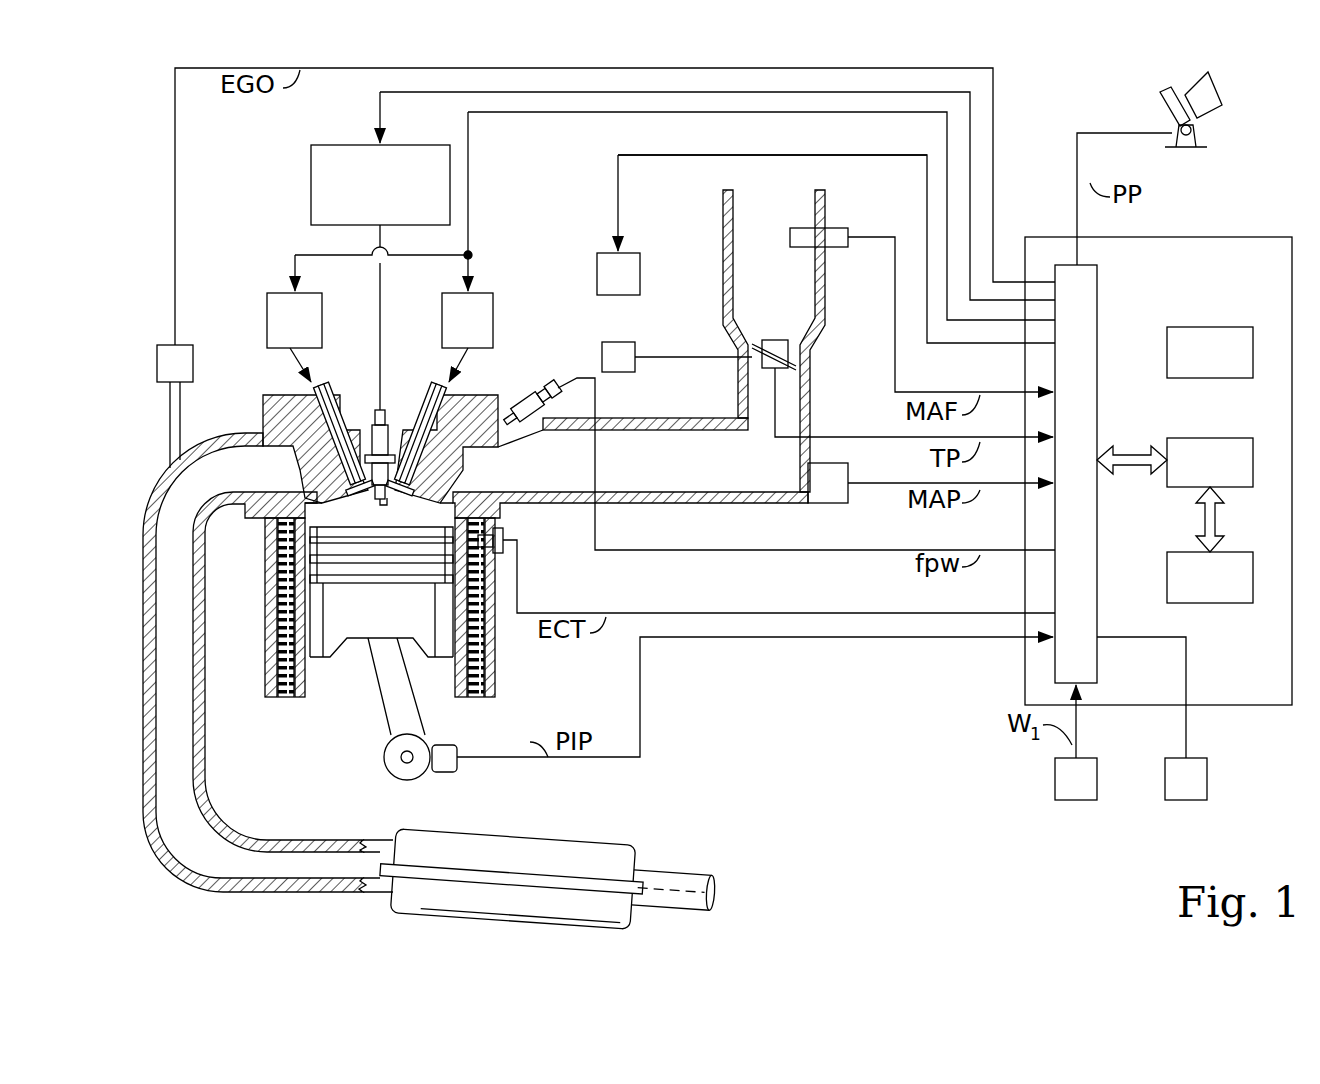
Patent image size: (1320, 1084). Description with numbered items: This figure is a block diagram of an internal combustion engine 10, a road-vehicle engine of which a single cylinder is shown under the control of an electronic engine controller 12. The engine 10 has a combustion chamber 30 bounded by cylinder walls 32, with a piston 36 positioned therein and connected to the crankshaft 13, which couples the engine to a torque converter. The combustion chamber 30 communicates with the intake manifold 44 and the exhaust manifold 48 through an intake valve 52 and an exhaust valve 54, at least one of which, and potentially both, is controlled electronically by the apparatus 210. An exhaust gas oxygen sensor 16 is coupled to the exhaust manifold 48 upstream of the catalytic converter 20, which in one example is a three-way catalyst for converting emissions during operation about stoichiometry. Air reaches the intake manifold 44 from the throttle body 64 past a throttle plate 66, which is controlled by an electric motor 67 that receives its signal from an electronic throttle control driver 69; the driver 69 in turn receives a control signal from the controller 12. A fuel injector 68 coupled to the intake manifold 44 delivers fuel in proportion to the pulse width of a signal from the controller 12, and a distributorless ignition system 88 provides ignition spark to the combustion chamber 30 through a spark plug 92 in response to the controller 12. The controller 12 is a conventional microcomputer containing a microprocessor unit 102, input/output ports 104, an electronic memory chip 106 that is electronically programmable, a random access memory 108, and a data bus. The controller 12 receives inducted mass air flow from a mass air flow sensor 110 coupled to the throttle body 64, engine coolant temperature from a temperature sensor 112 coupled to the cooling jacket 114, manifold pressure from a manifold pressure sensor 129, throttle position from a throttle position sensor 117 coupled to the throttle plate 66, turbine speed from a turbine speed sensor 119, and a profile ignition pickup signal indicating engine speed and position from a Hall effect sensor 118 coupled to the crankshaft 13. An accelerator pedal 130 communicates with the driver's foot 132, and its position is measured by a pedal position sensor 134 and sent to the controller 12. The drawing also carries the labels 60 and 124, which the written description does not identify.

The internal combustion engine 10 is at (297, 789).
The electronic engine controller 12 is at (1245, 237).
The crankshaft 13 is at (407, 775).
The exhaust gas oxygen sensor 16 is at (183, 345).
The catalytic converter 20 is at (597, 846).
The combustion chamber 30 is at (368, 515).
The cylinder walls 32 is at (312, 683).
The piston 36 is at (375, 645).
The intake manifold 44 is at (715, 482).
The exhaust manifold 48 is at (150, 505).
The intake valve 52 is at (430, 488).
The exhaust valve 54 is at (320, 488).
The control signal line 60 is at (762, 155).
The throttle body 64 is at (797, 210).
The throttle plate 66 is at (752, 345).
The electric motor 67 is at (628, 342).
The fuel injector 68 is at (525, 395).
The ETC driver 69 is at (628, 253).
The distributorless ignition system 88 is at (400, 145).
The spark plug 92 is at (384, 415).
The microprocessor unit 102 is at (1195, 438).
The input/output ports 104 is at (1097, 308).
The electronic memory chip 106 is at (1195, 327).
The random access memory 108 is at (1228, 552).
The mass air flow sensor 110 is at (835, 228).
The temperature sensor 112 is at (505, 533).
The cooling jacket 114 is at (495, 670).
The throttle position sensor 117 is at (780, 340).
The Hall effect sensor 118 is at (440, 745).
The turbine speed sensor 119 is at (1088, 758).
The sensor 124 is at (1196, 758).
The MAP sensor 129 is at (828, 503).
The accelerator pedal 130 is at (1165, 102).
The driver's foot 132 is at (1215, 92).
The pedal position sensor 134 is at (1200, 137).
The apparatus 210 is at (315, 338).